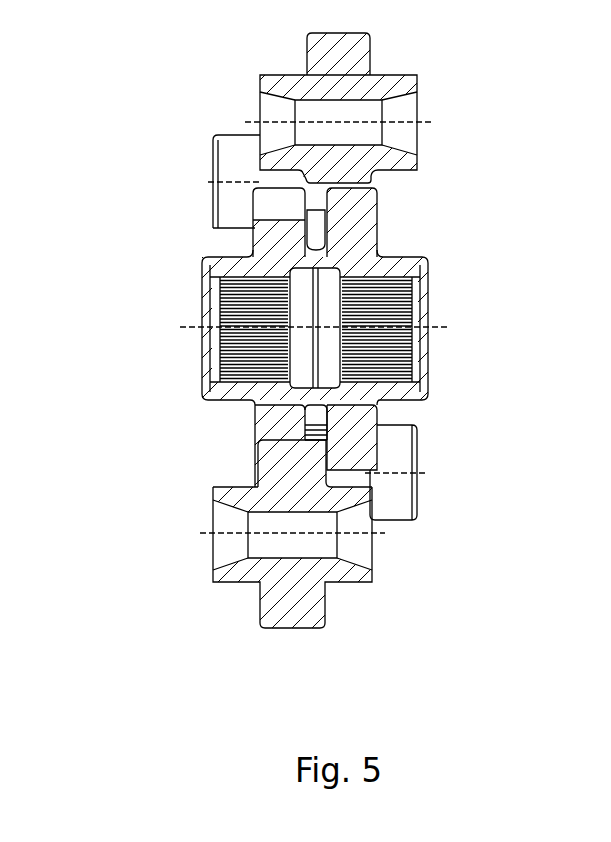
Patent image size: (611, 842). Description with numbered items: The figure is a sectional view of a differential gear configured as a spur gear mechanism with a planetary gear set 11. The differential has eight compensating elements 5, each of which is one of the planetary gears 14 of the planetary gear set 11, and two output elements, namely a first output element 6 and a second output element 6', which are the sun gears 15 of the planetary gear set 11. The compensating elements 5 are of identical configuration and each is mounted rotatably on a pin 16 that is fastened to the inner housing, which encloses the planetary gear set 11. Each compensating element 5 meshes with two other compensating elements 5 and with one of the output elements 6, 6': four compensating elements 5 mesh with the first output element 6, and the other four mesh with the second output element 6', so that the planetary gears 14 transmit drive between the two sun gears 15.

The planetary gear set 11 is at (147, 137).
The compensating element 5 is at (411, 108).
The planetary gear 14 is at (417, 92).
The pin 16 is at (235, 223).
The first output element 6 is at (185, 330).
The second output element 6' is at (444, 330).
The sun gear 15 is at (314, 330).